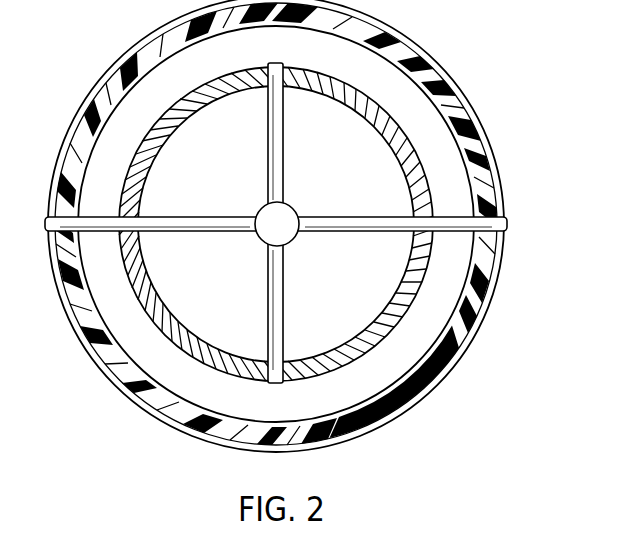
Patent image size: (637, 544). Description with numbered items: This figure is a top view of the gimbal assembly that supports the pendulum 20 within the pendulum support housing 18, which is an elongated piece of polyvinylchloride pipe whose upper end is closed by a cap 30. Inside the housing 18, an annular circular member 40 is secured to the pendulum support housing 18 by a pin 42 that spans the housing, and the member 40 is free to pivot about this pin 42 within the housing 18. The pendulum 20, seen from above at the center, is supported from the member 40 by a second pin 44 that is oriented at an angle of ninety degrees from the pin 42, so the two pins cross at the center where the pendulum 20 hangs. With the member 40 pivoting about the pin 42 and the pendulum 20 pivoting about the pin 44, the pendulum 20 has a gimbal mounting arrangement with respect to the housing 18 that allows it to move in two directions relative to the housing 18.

The pendulum support housing 18 is at (408, 62).
The cap 30 is at (105, 72).
The annular circular member 40 is at (140, 290).
The pin 42 is at (455, 222).
The pin 44 is at (284, 132).
The pendulum 20 is at (277, 237).